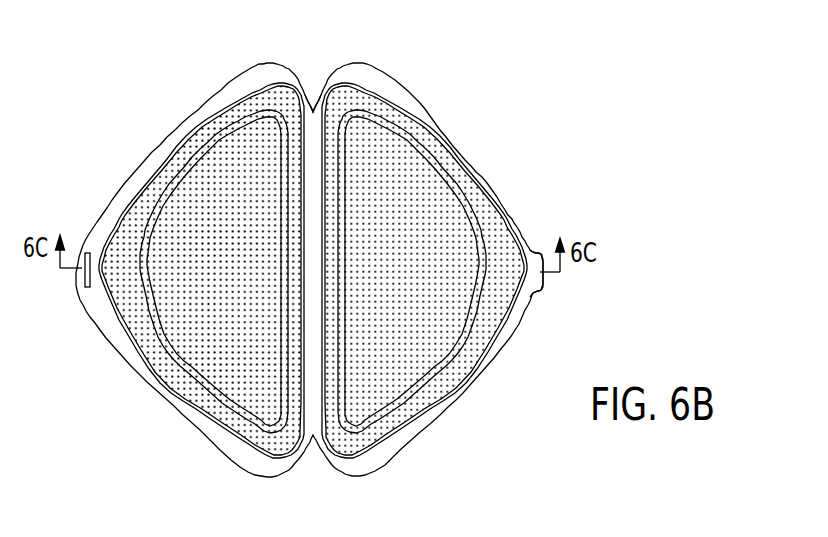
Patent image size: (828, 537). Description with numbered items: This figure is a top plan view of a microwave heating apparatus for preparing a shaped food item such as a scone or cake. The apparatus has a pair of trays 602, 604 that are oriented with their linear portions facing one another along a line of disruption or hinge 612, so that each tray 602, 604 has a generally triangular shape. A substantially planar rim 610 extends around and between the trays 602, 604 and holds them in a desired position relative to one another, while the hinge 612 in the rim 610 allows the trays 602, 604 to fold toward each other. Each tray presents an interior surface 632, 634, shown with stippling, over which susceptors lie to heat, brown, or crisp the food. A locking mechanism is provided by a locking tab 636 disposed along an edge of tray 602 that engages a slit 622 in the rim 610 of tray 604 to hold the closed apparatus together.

The tray 602 is at (193, 70).
The tray 604 is at (422, 70).
The rim 610 is at (466, 166).
The line of disruption or hinge 612 is at (306, 92).
The slit 622 is at (85, 280).
The interior surface 632 is at (251, 257).
The interior surface 634 is at (423, 257).
The locking tab 636 is at (541, 284).